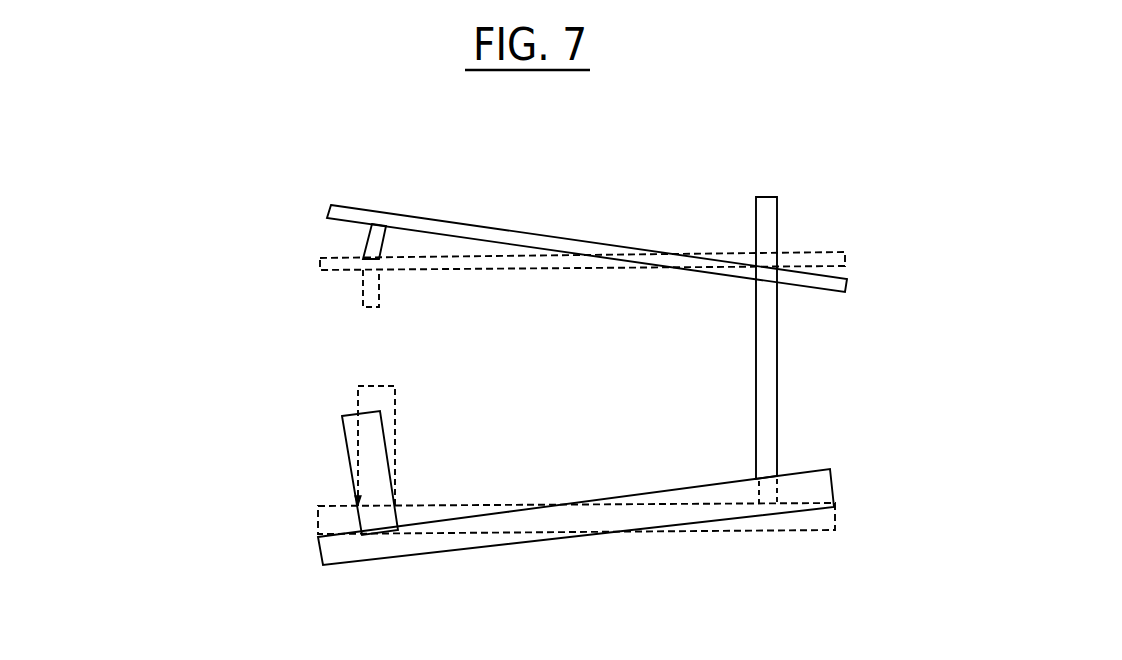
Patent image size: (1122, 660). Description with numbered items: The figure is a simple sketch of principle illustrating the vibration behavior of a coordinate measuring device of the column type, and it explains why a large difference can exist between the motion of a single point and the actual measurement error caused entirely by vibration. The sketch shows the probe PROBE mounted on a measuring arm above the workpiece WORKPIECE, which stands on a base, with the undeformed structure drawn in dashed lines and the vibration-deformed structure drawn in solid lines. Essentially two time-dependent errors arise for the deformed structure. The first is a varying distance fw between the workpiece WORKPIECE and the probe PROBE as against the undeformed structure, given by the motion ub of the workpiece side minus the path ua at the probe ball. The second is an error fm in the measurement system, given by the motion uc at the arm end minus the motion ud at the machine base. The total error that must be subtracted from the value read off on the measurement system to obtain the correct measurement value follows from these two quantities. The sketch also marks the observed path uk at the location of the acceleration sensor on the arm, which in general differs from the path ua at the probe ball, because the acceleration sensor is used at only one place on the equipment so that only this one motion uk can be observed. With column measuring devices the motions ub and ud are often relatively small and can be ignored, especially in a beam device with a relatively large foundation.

The probe PROBE is at (373, 243).
The workpiece WORKPIECE is at (378, 485).
The observed path u_k(t) uk is at (412, 262).
The path u_a(t) ua is at (358, 307).
The motion u_b(t) ub is at (358, 386).
The motion u_c(t) uc is at (845, 264).
The motion u_d(t) ud is at (830, 475).
The varying distance f_w(t) fw is at (341, 415).
The measurement system error f_m(t) fm is at (872, 280).